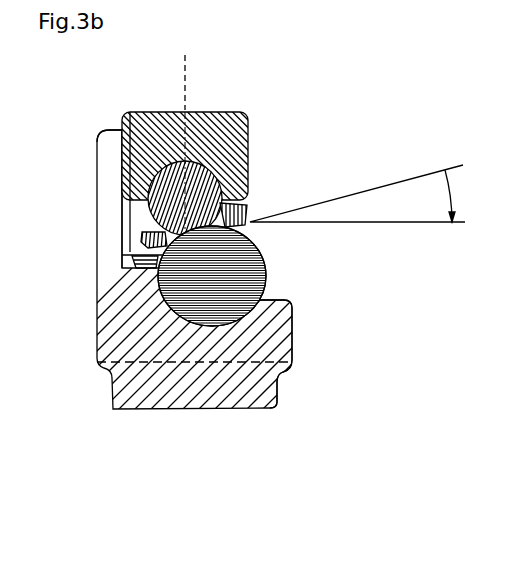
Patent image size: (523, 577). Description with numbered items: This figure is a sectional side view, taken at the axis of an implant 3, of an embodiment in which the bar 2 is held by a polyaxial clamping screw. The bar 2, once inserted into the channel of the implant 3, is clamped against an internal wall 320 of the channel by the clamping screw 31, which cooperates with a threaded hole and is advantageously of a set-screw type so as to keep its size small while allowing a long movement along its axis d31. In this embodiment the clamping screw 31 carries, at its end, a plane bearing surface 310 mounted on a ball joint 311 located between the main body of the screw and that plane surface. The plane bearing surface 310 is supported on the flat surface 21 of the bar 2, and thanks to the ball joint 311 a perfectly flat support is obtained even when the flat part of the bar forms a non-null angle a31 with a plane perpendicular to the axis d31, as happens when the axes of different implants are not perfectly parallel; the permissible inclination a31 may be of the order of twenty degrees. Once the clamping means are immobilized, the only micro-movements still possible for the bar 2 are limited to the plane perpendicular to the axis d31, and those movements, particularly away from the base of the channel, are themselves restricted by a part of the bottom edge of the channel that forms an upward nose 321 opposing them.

The clamping screw 31 is at (140, 130).
The axis of the clamping means d31 is at (187, 92).
The ball joint 311 is at (195, 176).
The plane bearing surface 310 is at (160, 230).
The angle of inclination a31 is at (357, 193).
The flat surface of the bar 21 is at (263, 252).
The bar 2 is at (170, 300).
The implant 3 is at (123, 388).
The upward nose 321 is at (277, 313).
The internal wall of the channel 320 is at (272, 385).